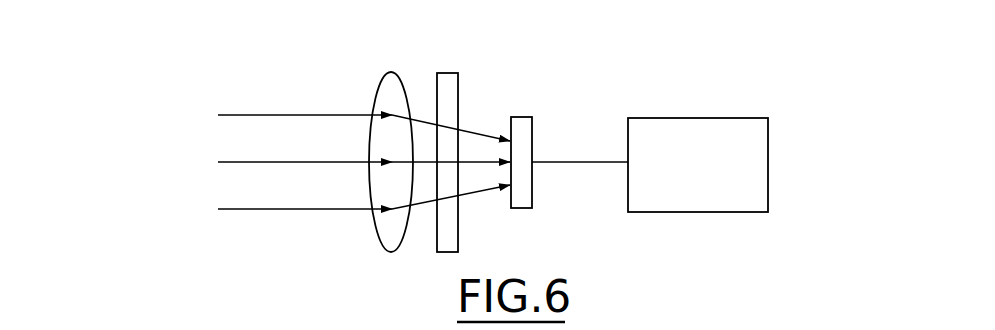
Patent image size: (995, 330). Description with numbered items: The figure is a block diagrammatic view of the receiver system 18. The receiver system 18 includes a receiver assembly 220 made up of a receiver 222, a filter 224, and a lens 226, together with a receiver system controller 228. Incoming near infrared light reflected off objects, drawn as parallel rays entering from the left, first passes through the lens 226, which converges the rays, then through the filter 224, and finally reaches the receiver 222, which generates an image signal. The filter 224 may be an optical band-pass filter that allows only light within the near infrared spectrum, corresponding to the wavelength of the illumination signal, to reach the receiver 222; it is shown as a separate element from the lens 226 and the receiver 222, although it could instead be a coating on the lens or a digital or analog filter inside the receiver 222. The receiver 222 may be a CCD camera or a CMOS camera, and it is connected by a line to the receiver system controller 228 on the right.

The receiver system 18 is at (788, 81).
The receiver assembly 220 is at (593, 236).
The receiver 222 is at (534, 127).
The filter 224 is at (460, 236).
The lens 226 is at (375, 236).
The receiver system controller 228 is at (770, 159).